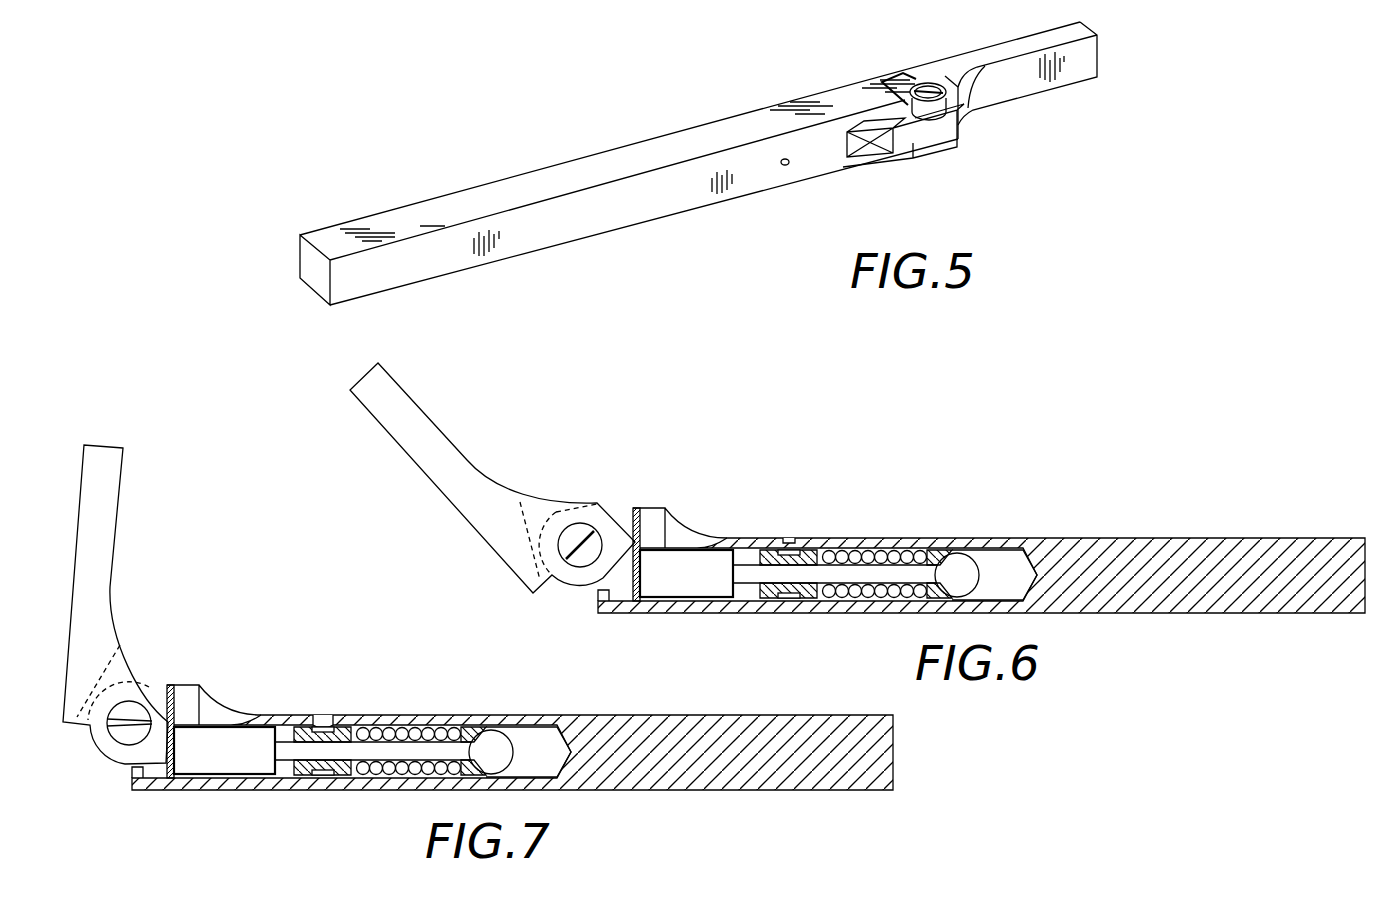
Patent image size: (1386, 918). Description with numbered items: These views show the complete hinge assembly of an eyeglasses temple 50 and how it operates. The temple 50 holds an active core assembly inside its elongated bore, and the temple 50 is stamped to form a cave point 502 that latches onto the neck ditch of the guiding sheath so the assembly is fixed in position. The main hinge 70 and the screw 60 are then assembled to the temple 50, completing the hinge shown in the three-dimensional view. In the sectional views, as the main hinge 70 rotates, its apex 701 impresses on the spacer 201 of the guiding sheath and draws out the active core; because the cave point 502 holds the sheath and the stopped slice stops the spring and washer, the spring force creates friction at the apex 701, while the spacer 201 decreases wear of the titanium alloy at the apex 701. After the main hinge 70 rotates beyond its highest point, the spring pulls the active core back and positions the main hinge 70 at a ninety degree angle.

In FIG. 5, the eye-glasses temple 50 is at (630, 213).
In FIG. 5, the screw 60 is at (930, 80).
In FIG. 5, the main hinge 70 is at (1070, 76).
In FIG. 5, the cave point 502 is at (789, 166).
In FIG. 6, the apex 701 is at (634, 548).
In FIG. 6, the spacer 201 is at (641, 508).